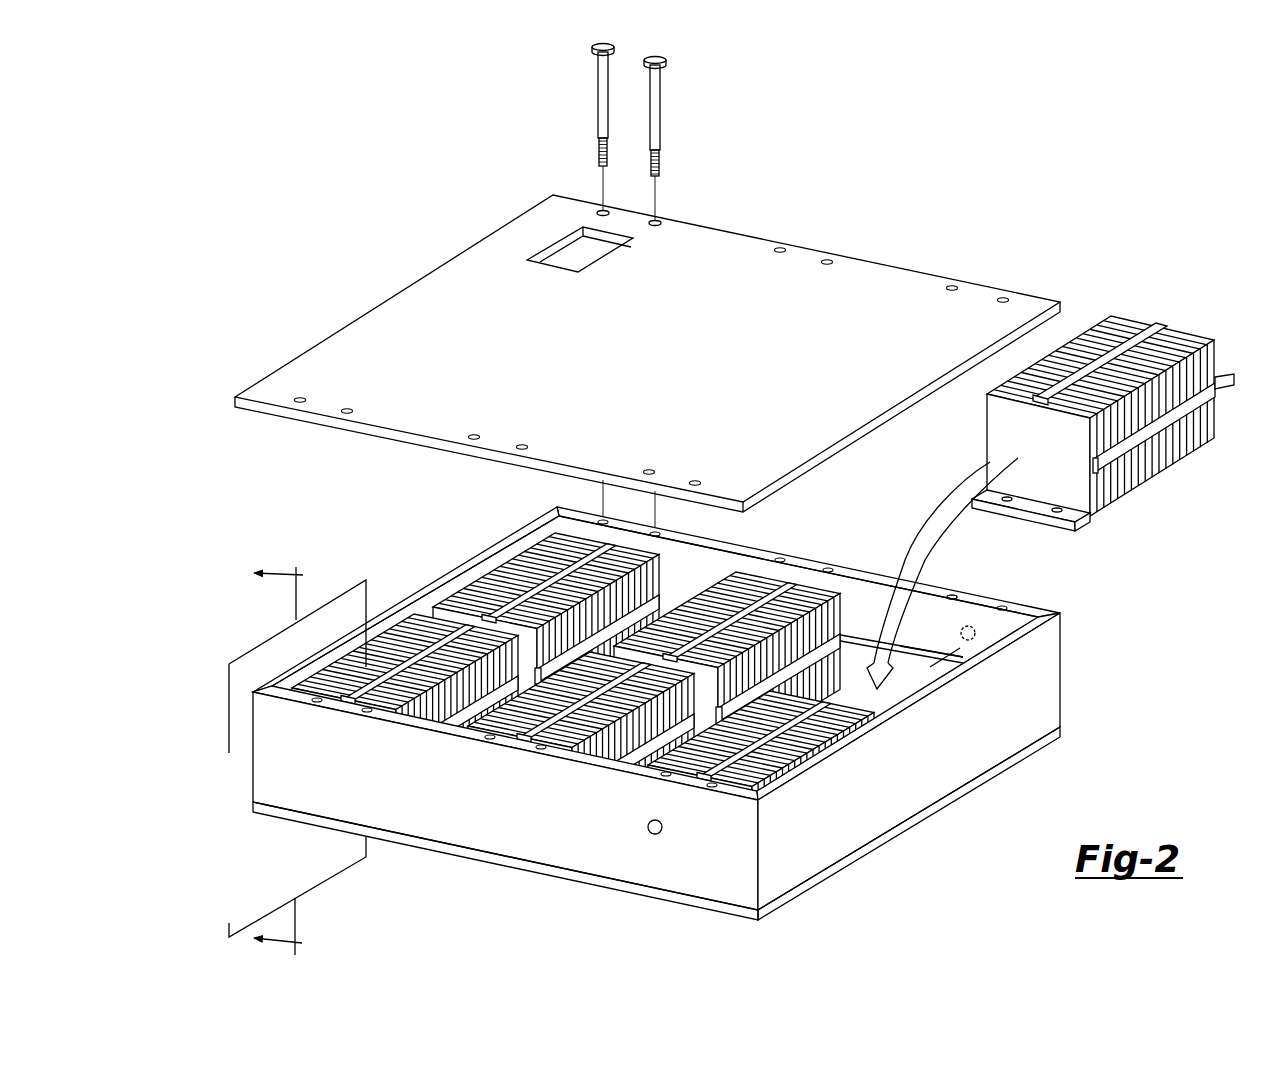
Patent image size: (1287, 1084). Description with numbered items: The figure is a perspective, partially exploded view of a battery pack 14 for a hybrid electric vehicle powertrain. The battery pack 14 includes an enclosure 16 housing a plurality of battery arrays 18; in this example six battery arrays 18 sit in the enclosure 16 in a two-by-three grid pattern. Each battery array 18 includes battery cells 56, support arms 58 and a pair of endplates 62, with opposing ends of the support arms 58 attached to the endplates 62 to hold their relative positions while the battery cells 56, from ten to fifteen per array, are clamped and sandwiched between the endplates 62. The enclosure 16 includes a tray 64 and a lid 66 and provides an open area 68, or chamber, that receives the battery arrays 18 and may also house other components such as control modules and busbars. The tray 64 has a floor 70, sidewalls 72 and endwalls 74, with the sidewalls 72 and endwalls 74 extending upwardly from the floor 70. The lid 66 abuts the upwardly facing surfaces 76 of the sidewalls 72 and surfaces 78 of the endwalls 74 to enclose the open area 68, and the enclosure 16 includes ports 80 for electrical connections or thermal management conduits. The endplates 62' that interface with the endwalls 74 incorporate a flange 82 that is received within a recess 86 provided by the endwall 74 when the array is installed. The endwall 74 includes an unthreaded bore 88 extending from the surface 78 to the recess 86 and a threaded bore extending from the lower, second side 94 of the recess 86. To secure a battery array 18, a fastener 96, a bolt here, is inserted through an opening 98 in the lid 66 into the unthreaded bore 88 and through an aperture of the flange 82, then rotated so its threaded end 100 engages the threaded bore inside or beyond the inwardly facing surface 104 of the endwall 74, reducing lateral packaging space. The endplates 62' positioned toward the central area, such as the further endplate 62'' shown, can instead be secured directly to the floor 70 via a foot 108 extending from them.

The battery pack 14 is at (733, 607).
The enclosure 16 is at (312, 358).
The battery arrays 18 is at (363, 710).
The battery cells 56 is at (1040, 398).
The support arms 58 is at (1160, 426).
The endplates 62 is at (1077, 439).
The endplates 62' is at (821, 505).
The battery array 62'' is at (539, 626).
The tray 64 is at (214, 767).
The lid 66 is at (647, 332).
The open area 68 is at (686, 579).
The floor 70 is at (827, 873).
The sidewalls 72 is at (773, 873).
The endwalls 74 is at (687, 873).
The surfaces of the sidewalls 76 is at (877, 722).
The surfaces of the endwalls 78 is at (605, 758).
The ports 80 is at (607, 250).
The flange 82 is at (852, 642).
The recess 86 is at (918, 657).
The unthreaded bore 88 is at (836, 560).
The second side 94 is at (936, 662).
The fastener 96 is at (613, 132).
The opening 98 is at (600, 206).
The threaded end 100 is at (596, 150).
The inwardly facing surface 104 is at (945, 583).
The foot 108 is at (1075, 504).